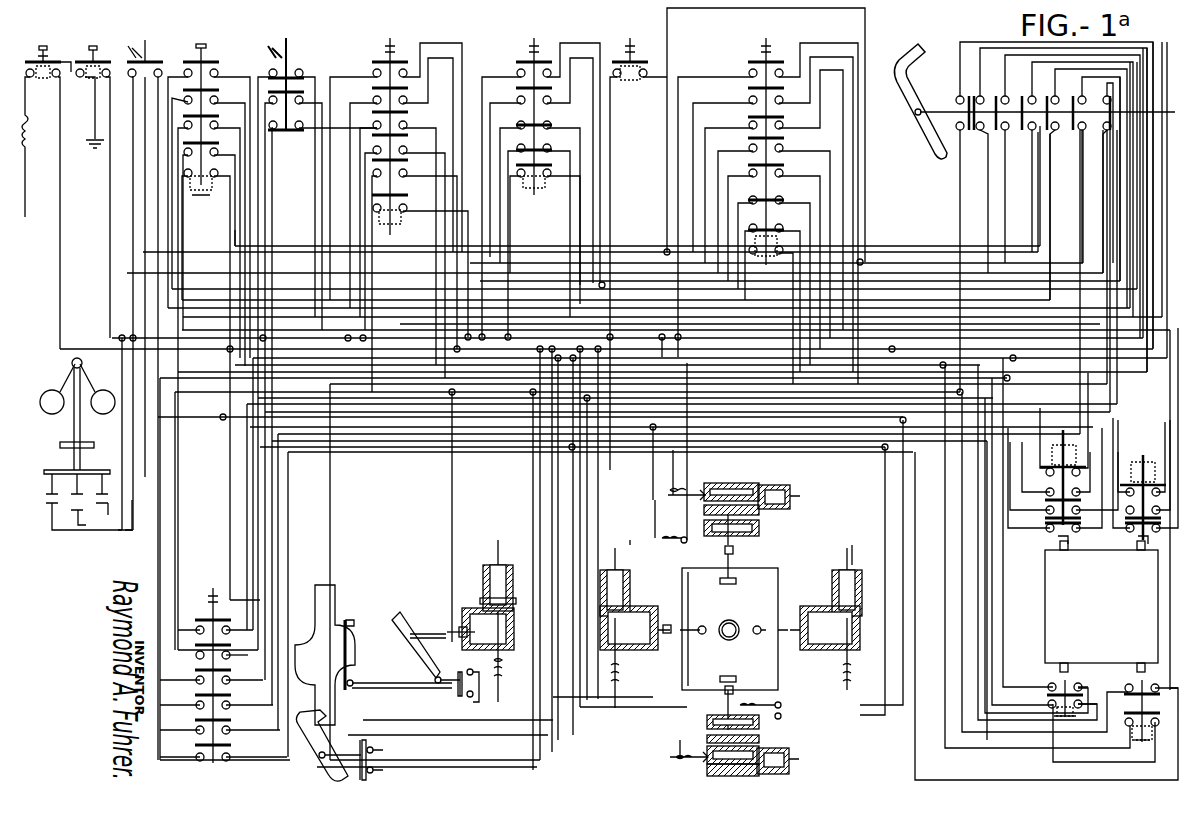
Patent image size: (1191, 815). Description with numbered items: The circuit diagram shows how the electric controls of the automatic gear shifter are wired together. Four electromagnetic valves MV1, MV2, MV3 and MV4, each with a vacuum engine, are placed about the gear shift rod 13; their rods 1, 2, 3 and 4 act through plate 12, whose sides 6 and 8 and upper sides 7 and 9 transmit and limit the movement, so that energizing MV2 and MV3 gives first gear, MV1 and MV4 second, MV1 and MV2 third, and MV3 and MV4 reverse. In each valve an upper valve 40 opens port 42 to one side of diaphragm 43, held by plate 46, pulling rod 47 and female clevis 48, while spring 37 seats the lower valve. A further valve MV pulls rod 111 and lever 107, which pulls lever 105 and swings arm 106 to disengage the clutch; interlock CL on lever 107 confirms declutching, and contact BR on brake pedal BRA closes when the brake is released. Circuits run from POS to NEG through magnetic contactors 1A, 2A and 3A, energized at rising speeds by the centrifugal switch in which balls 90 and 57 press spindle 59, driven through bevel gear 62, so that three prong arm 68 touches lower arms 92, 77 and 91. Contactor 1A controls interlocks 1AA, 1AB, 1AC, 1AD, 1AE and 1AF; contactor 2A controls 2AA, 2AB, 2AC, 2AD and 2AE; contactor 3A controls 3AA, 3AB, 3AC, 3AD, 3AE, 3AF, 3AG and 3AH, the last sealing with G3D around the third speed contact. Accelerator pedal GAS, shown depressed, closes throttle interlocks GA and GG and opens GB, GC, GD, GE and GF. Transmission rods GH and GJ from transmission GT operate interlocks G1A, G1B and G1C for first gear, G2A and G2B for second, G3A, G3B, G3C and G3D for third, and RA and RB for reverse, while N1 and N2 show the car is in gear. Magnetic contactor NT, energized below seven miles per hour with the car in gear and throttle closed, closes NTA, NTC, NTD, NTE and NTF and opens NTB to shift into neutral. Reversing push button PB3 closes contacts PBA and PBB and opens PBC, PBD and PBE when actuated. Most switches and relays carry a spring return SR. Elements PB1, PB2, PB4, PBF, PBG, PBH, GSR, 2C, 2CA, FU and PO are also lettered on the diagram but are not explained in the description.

The push button 1 switch PB1 is at (52, 22).
The relay GSR is at (106, 24).
The push button 2 switch PB2 is at (162, 24).
The reversing push button PB3 is at (222, 24).
The push button 4 switch PB4 is at (306, 24).
The magnetic contactor 1A is at (375, 48).
The magnetic contactor 2A is at (519, 48).
The relay 2C is at (630, 48).
The magnetic contactor 3A is at (751, 48).
The accelerator pedal GAS is at (919, 46).
The spring return SR is at (587, 427).
The fuse FU is at (36, 147).
The positive terminal POS is at (60, 195).
The power terminal PO is at (25, 220).
The negative terminal NEG is at (98, 116).
The push button contact PBA is at (222, 73).
The push button contact PBB is at (219, 99).
The push button contact PBC is at (210, 239).
The push button contact PBD is at (210, 231).
The push button contact PBE is at (222, 170).
The contact PBF is at (300, 70).
The contact PBG is at (293, 254).
The contact PBH is at (300, 128).
The interlock 1AA is at (376, 74).
The interlock 1AB is at (395, 183).
The interlock 1AC is at (387, 243).
The interlock 1AD is at (405, 250).
The interlock 1AE is at (407, 280).
The interlock 1AF is at (420, 270).
The interlock 2AA is at (520, 76).
The interlock 2AB is at (540, 170).
The interlock 2AC is at (538, 212).
The interlock 2AD is at (541, 233).
The interlock 2AE is at (545, 180).
The contact 2CA is at (645, 72).
The interlock 3AA is at (751, 75).
The interlock 3AB is at (773, 214).
The interlock 3AC is at (774, 200).
The interlock 3AD is at (774, 241).
The interlock 3AE is at (773, 259).
The interlock 3AF is at (771, 280).
The interlock 3AG is at (776, 287).
The interlock 3AH is at (820, 242).
The throttle interlock GA is at (960, 106).
The throttle interlock GB is at (1055, 210).
The throttle interlock GC is at (1064, 196).
The throttle interlock GD is at (1072, 189).
The throttle interlock GE is at (1082, 188).
The throttle interlock GF is at (1091, 179).
The throttle interlock GG is at (1100, 178).
The ball 90 is at (40, 398).
The ball 57 is at (102, 388).
The valve spindle 59 is at (82, 426).
The bevel gear 62 is at (58, 442).
The three prong upper contact arm 68 is at (50, 468).
The lower contact arm 77 is at (48, 501).
The lower contact arm 91 is at (72, 530).
The lower contact arm 92 is at (104, 530).
The magnetic contactor NT is at (204, 592).
The interlock NTA is at (215, 637).
The interlock NTB is at (210, 663).
The interlock NTC is at (211, 688).
The interlock NTD is at (216, 713).
The interlock NTE is at (220, 738).
The interlock NTF is at (223, 764).
The arm 106 is at (350, 655).
The lever 105 is at (412, 686).
The lever 107 is at (422, 660).
The rod 111 is at (442, 618).
The electric interlock contact CL is at (464, 700).
The brake pedal BRA is at (314, 724).
The interlock contact BR is at (368, 750).
The electromagnetic valve MV is at (504, 692).
The electromagnetic valve MV1 is at (622, 680).
The electromagnetic valve MV2 is at (706, 504).
The electromagnetic valve MV3 is at (842, 676).
The electromagnetic valve MV4 is at (706, 770).
The port 42 is at (794, 765).
The spring 37 is at (792, 754).
The plate 46 is at (669, 670).
The diaphragm 43 is at (750, 518).
The upper valve 40 is at (688, 749).
The female clevis 48 is at (750, 659).
The rod 47 is at (779, 506).
The interlock N1 is at (690, 544).
The interlock N2 is at (778, 722).
The rod 1 is at (678, 624).
The rod 2 is at (732, 570).
The rod 3 is at (790, 616).
The rod 4 is at (724, 690).
The side 6 is at (682, 598).
The upper extended side 7 is at (772, 566).
The side 8 is at (778, 660).
The upper extended side 9 is at (684, 692).
The plate 12 is at (700, 582).
The gear shift rod 13 is at (745, 618).
The interlock G3D is at (1048, 432).
The interlock G3C is at (1052, 496).
The interlock G3B is at (1048, 514).
The interlock G3A is at (1056, 489).
The interlock G1C is at (1157, 472).
The interlock G1B is at (1145, 471).
The interlock G1A is at (1147, 439).
The transmission GT is at (1046, 610).
The transmission rod GH is at (1074, 671).
The transmission rod GJ is at (1148, 673).
The interlock G2A is at (1058, 690).
The interlock G2B is at (1048, 701).
The interlock RA is at (1137, 686).
The interlock RB is at (1146, 722).